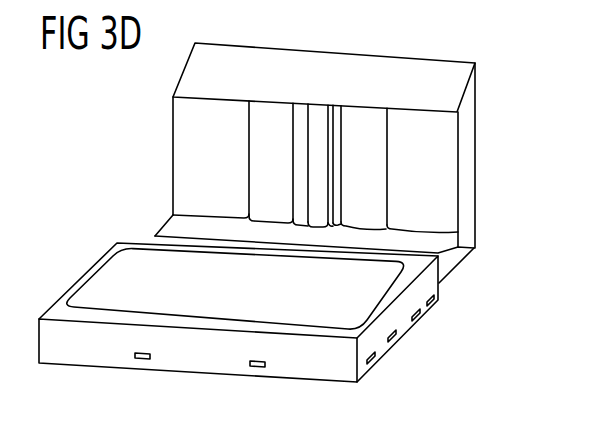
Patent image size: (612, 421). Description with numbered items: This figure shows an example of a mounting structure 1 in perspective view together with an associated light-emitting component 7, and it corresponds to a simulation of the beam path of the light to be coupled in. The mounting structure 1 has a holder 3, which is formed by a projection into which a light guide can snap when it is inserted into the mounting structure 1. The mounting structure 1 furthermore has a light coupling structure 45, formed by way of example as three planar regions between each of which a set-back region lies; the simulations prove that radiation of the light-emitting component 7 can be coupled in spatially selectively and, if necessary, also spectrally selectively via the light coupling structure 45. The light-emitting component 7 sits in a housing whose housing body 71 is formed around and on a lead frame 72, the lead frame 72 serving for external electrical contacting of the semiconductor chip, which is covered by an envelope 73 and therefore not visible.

The mounting structure 1 is at (503, 75).
The holder 3 is at (462, 114).
The light coupling structure 45 is at (370, 128).
The light-emitting component 7 is at (427, 251).
The envelope 73 is at (405, 272).
The housing body 71 is at (431, 305).
The lead frame 72 is at (402, 338).